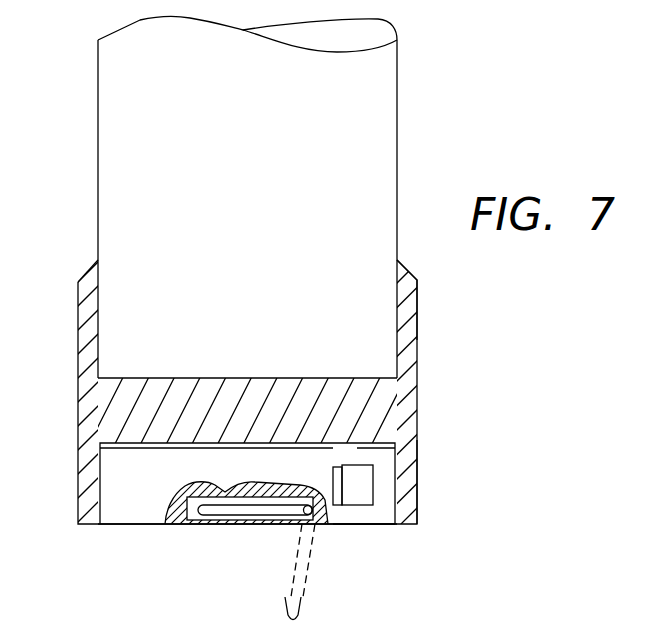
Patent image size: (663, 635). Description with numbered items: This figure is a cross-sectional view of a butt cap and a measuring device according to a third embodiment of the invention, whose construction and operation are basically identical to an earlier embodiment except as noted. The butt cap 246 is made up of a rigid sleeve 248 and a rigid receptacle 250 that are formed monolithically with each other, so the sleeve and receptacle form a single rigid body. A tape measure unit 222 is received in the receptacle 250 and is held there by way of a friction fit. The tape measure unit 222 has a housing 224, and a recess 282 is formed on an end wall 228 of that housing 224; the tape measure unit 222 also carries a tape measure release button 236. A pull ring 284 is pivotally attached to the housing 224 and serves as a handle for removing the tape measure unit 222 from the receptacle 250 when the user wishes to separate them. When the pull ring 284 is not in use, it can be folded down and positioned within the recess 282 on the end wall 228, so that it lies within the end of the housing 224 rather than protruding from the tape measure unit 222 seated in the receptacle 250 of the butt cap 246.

The tape measure unit 222 is at (124, 545).
The housing 224 is at (133, 490).
The end wall 228 is at (352, 524).
The tape measure release button 236 is at (352, 443).
The butt cap 246 is at (446, 396).
The rigid sleeve 248 is at (413, 307).
The rigid receptacle 250 is at (408, 482).
The recess 282 is at (193, 524).
The pull ring 284 is at (257, 514).